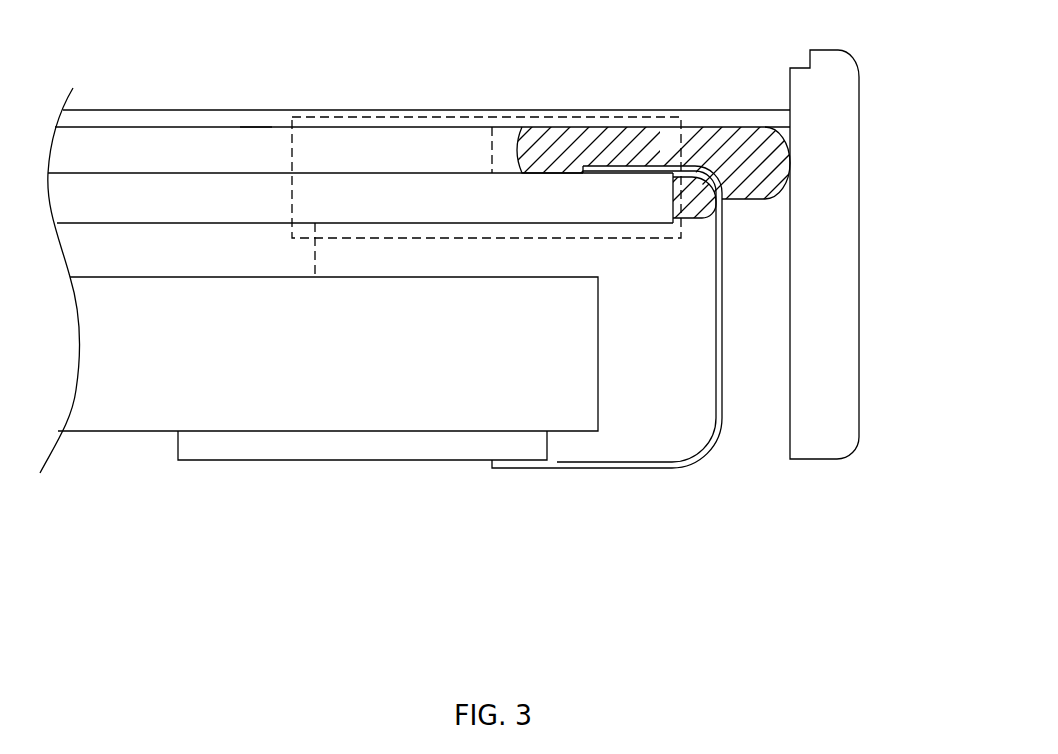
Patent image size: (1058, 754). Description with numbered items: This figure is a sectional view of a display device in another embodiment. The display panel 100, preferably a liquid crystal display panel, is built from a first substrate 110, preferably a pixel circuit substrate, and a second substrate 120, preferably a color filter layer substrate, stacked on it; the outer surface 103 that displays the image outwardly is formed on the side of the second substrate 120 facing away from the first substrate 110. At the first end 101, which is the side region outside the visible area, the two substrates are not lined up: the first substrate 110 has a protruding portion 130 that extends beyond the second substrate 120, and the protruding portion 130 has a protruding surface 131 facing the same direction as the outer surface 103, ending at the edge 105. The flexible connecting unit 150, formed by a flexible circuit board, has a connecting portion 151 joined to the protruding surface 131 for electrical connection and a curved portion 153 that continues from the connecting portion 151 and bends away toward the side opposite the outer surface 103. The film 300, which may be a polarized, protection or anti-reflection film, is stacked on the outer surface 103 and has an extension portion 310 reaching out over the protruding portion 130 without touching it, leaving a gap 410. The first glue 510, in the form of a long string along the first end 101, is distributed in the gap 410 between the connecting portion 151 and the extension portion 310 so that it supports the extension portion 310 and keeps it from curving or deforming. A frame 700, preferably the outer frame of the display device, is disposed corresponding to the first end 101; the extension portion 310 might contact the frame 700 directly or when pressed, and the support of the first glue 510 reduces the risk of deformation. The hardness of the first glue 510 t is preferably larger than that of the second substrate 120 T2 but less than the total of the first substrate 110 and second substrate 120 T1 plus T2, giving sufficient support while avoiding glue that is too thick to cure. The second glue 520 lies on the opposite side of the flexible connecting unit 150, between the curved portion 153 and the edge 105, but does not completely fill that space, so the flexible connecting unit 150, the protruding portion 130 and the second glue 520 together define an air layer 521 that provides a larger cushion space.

The display panel 100 is at (366, 286).
The first end 101 is at (683, 228).
The outer surface 103 is at (258, 122).
The edge 105 is at (698, 197).
The first substrate 110 is at (374, 304).
The second substrate 120 is at (92, 143).
The protruding portion 130 is at (592, 314).
The protruding surface 131 is at (547, 172).
The flexible connecting unit 150 is at (664, 287).
The connecting portion 151 is at (675, 170).
The curved portion 153 is at (717, 333).
The film 300 is at (181, 118).
The extension portion 310 is at (540, 125).
The gap 410 is at (501, 159).
The first glue 510 is at (737, 143).
The second glue 520 is at (693, 187).
The air layer 521 is at (650, 172).
The frame 700 is at (852, 378).
The hardness of the first substrate T1 is at (195, 178).
The hardness of the second substrate T2 is at (218, 132).
The hardness of the first glue t is at (790, 127).